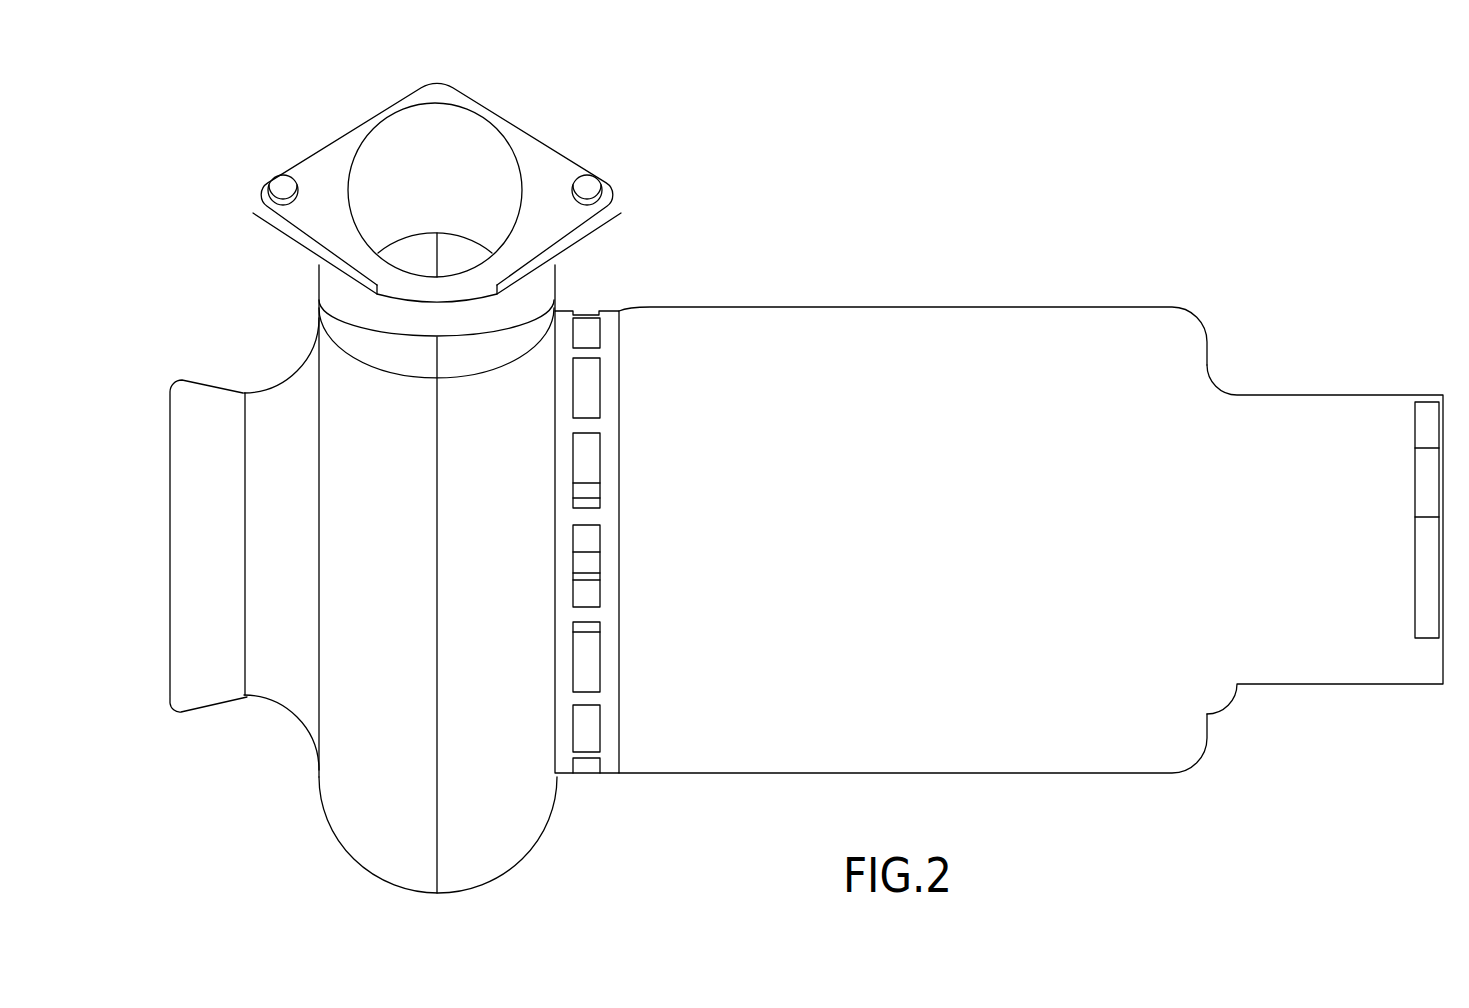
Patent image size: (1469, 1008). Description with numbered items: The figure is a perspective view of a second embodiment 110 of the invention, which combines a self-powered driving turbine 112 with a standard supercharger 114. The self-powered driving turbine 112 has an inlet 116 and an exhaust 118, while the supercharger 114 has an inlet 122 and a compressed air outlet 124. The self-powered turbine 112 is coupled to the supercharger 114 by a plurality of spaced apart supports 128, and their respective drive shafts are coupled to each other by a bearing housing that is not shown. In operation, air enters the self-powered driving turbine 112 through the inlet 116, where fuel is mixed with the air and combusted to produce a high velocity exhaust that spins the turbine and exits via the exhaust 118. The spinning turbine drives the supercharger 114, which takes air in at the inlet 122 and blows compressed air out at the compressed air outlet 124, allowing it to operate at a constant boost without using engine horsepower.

The second embodiment 110 is at (1140, 157).
The self-powered driving turbine 112 is at (925, 542).
The standard supercharger 114 is at (402, 602).
The inlet 116 is at (608, 293).
The exhaust 118 is at (1305, 380).
The inlet 122 is at (168, 447).
The compressed air outlet 124 is at (473, 168).
The spaced apart supports 128 is at (585, 613).